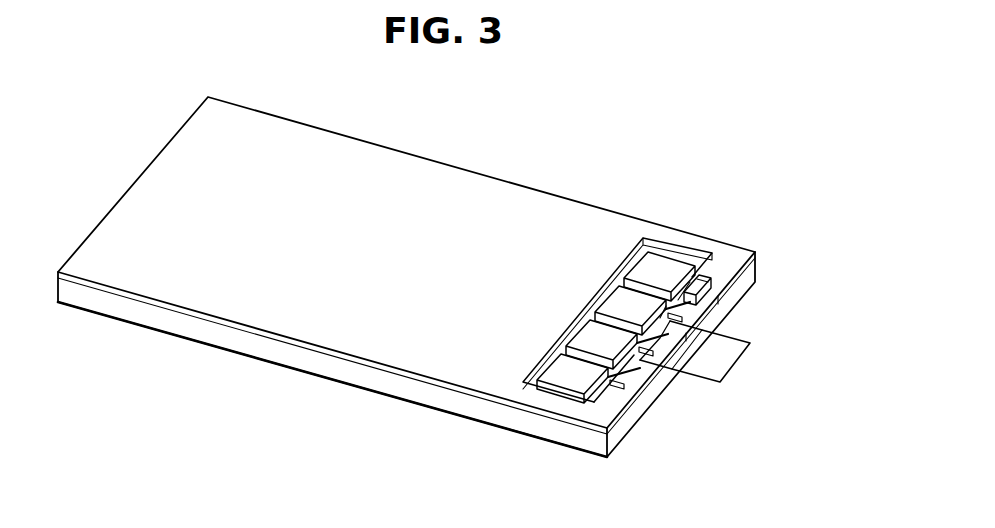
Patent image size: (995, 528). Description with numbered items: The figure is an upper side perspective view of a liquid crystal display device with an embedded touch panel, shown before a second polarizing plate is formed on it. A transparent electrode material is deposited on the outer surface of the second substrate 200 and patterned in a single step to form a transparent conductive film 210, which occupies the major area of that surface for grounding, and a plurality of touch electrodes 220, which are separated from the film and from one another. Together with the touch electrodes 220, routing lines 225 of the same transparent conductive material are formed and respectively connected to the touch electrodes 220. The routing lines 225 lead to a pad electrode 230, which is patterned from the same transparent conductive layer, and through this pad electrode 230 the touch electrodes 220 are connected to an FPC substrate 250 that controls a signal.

The second substrate 200 is at (525, 423).
The transparent conductive film 210 is at (297, 338).
The touch electrodes 220 is at (657, 267).
The routing lines 225 is at (623, 362).
The pad electrode 230 is at (703, 297).
The FPC substrate 250 is at (725, 363).